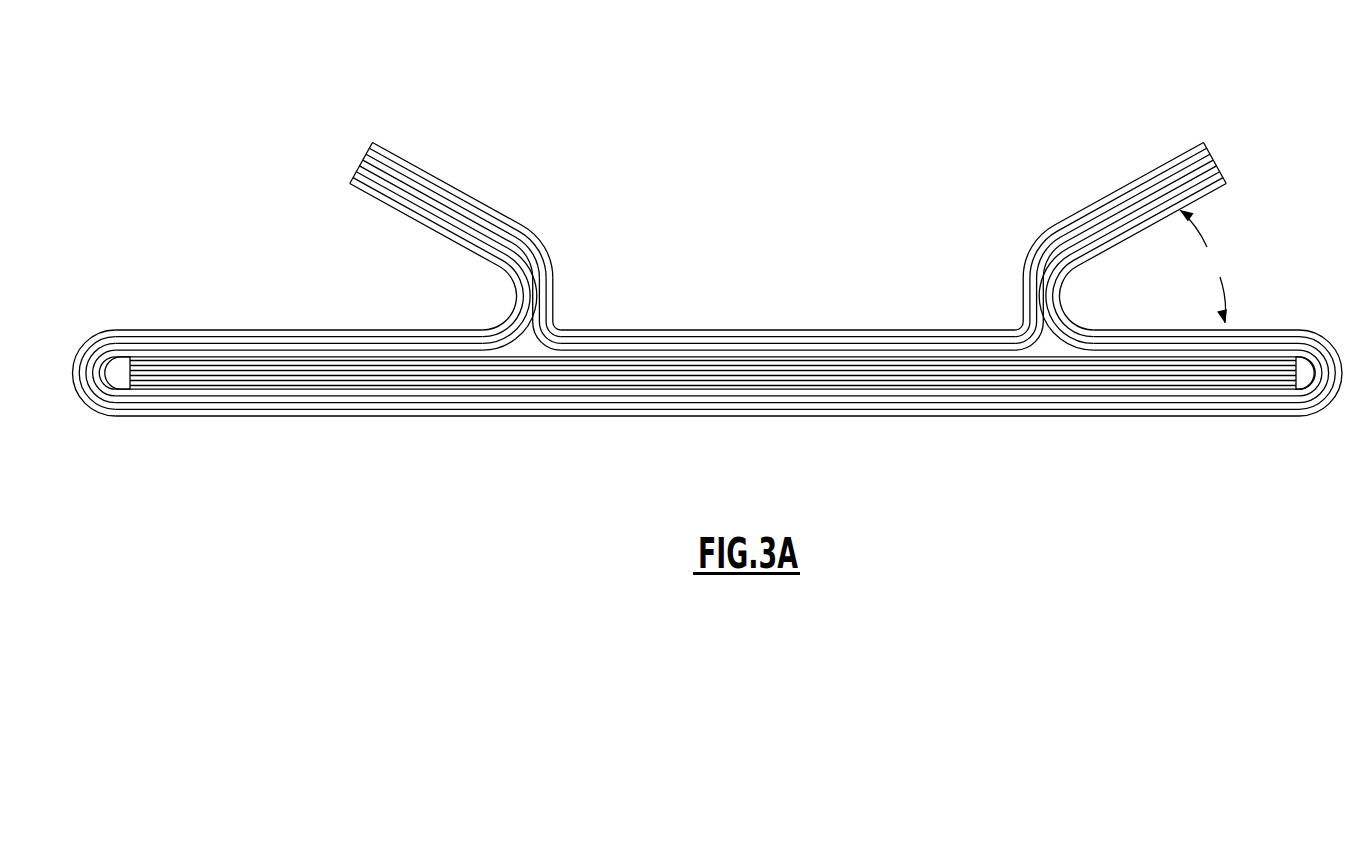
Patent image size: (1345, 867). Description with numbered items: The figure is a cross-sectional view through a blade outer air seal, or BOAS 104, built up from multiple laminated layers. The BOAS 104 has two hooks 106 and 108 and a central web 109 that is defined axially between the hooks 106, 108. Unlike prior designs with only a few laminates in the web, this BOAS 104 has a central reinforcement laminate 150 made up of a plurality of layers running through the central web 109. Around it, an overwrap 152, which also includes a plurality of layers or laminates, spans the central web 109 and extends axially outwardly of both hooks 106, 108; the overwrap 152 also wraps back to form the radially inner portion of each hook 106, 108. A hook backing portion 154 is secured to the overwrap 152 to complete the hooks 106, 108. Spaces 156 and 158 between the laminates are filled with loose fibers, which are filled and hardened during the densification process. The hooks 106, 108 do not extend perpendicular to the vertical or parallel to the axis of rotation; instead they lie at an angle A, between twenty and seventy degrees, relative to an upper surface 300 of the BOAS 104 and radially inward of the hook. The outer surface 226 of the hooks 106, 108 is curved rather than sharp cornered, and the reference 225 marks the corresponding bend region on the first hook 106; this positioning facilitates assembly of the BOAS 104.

The BOAS 104 is at (1008, 102).
The hook 106 is at (443, 212).
The hook 108 is at (1130, 188).
The central web 109 is at (677, 407).
The central reinforcement laminate 150 is at (660, 367).
The overwrap 152 is at (545, 408).
The hook backing portion 154 is at (545, 292).
The space 156 is at (527, 345).
The space 158 is at (110, 370).
The first S-bend 225 is at (547, 245).
The outer surface 226 is at (1035, 253).
The upper surface 300 is at (1143, 327).